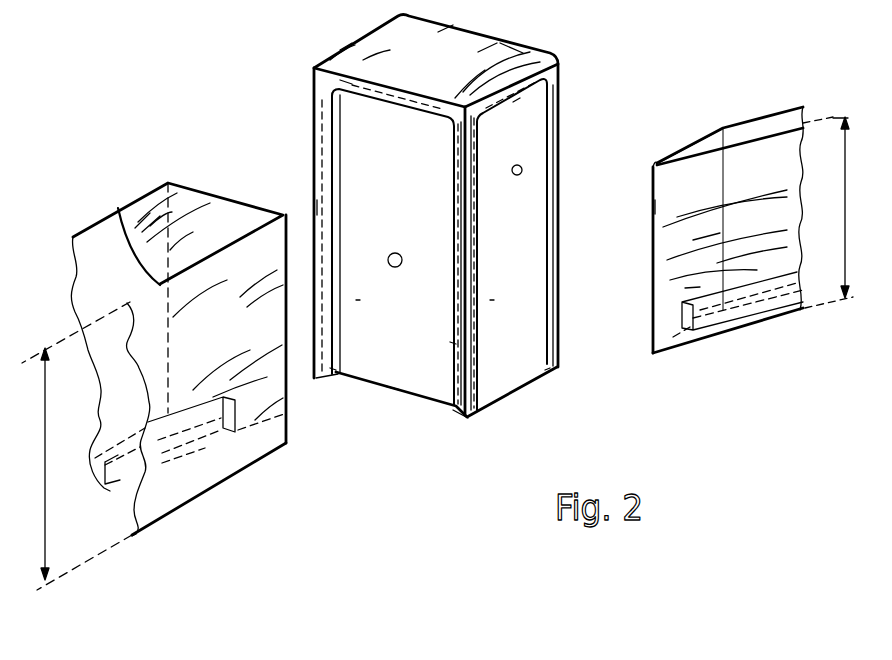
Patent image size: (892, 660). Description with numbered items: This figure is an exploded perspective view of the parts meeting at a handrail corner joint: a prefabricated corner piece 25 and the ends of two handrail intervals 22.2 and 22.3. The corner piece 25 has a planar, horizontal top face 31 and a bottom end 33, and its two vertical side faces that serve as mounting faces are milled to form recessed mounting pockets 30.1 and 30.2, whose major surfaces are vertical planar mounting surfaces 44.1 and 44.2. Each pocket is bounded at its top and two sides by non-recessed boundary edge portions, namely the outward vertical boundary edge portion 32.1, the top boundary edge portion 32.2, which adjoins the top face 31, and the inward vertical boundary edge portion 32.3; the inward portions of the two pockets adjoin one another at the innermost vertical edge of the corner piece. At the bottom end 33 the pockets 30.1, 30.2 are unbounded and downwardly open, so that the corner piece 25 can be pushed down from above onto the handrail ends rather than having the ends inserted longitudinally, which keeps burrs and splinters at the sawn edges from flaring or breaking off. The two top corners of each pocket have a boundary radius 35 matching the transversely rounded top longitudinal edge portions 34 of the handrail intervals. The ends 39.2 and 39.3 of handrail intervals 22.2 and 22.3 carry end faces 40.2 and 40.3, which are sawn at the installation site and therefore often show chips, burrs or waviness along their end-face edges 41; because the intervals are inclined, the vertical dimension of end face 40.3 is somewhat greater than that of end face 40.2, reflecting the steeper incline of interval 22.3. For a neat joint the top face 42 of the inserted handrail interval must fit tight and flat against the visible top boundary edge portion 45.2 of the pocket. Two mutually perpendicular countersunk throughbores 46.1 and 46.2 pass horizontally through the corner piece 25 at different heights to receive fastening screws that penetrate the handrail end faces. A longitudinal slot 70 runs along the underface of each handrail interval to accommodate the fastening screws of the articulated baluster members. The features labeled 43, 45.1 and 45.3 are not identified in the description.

The handrail interval 22.2 is at (717, 355).
The handrail interval 22.3 is at (250, 497).
The corner piece 25 is at (313, 122).
The mounting pocket 30.1 is at (535, 152).
The mounting pocket 30.2 is at (360, 167).
The top face 31 is at (435, 61).
The outward vertical boundary edge portion 32.1 is at (318, 207).
The top boundary edge portion 32.2 is at (355, 82).
The inward vertical boundary edge portion 32.3 is at (455, 417).
The bottom end 33 is at (397, 393).
The top longitudinally extending edge portion 34 is at (97, 220).
The boundary radius 35 is at (340, 98).
The end of handrail interval 39.2 is at (658, 166).
The end of handrail interval 39.3 is at (224, 222).
The end face 40.2 is at (663, 237).
The end face 40.3 is at (154, 386).
The end-face edge 41 is at (290, 402).
The top face of handrail interval 42 is at (780, 122).
The flange edge 43 is at (697, 162).
The mounting surface 44.1 is at (520, 310).
The mounting surface 44.2 is at (389, 316).
The first corner 45.1 is at (333, 367).
The visible top boundary edge portion 45.2 is at (517, 100).
The third corner 45.3 is at (453, 342).
The first countersunk throughbore 46.1 is at (512, 176).
The second countersunk throughbore 46.2 is at (401, 256).
The longitudinal slot 70 is at (117, 477).